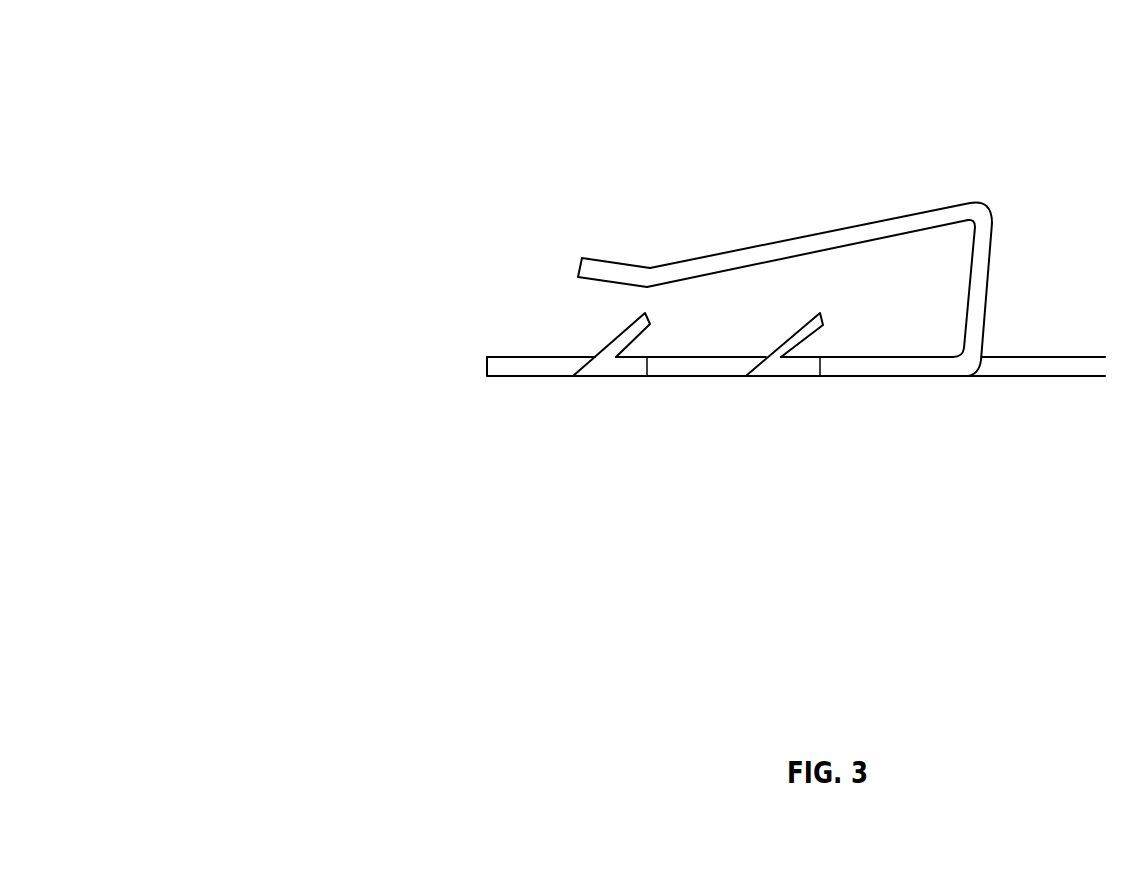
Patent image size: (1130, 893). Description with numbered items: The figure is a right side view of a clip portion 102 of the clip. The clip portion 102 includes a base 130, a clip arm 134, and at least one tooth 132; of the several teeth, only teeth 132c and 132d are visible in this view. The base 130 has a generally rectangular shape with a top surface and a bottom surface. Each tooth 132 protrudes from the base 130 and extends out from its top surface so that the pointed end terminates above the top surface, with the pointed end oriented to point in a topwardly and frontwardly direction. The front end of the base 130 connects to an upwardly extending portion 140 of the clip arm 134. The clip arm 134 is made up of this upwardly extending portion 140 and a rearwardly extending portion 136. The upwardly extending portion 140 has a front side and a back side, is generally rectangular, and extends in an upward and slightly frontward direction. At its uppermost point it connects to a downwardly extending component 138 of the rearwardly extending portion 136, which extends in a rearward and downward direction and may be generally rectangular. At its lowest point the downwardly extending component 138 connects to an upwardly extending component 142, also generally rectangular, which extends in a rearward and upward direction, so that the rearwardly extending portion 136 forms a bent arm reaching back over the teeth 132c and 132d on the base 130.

The clip portion 102 is at (260, 122).
The base 130 is at (530, 362).
The tooth 132 is at (679, 475).
The tooth 132c is at (603, 337).
The tooth 132d is at (785, 342).
The clip arm 134 is at (827, 221).
The rearwardly extending portion 136 is at (827, 241).
The downwardly extending component 138 is at (843, 227).
The upwardly extending portion 140 is at (988, 255).
The upwardly extending component 142 is at (607, 258).